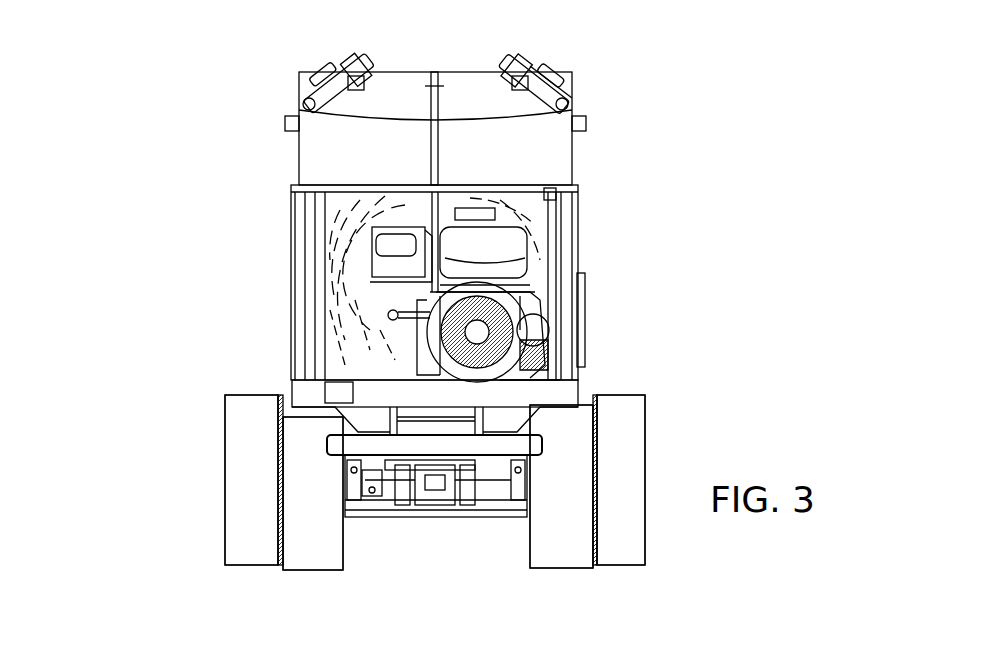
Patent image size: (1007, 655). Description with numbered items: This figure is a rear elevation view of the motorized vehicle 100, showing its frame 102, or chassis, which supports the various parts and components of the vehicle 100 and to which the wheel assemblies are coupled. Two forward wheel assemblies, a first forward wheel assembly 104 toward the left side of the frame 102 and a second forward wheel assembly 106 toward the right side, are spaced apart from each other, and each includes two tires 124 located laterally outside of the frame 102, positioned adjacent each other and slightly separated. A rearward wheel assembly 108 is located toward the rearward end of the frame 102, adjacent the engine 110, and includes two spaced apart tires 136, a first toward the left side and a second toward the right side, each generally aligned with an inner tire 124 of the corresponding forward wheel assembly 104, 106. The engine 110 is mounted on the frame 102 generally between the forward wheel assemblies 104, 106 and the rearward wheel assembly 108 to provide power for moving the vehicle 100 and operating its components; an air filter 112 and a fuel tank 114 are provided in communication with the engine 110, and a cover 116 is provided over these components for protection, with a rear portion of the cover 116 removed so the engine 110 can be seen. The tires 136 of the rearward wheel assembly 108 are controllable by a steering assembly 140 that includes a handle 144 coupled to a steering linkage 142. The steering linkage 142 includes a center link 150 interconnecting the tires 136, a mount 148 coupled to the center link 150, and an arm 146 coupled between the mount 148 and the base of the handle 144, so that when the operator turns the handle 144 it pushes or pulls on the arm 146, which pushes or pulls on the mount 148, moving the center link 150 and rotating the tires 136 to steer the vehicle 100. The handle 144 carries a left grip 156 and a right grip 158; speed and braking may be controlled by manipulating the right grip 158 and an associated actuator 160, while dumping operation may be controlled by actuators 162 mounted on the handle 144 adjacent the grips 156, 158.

The vehicle 100 is at (672, 112).
The frame 102 is at (295, 385).
The first forward wheel assembly 104 is at (220, 432).
The second forward wheel assembly 106 is at (648, 407).
The rearward wheel assembly 108 is at (265, 552).
The engine 110 is at (567, 326).
The air filter 112 is at (370, 250).
The fuel tank 114 is at (505, 246).
The cover 116 is at (295, 185).
The tire 124 is at (272, 400).
The tire 136 is at (303, 560).
The steering assembly 140 is at (328, 52).
The steering linkage 142 is at (478, 525).
The handle 144 is at (435, 170).
The arm 146 is at (395, 508).
The mount 148 is at (367, 497).
The center link 150 is at (407, 480).
The left grip 156 is at (302, 93).
The right grip 158 is at (558, 90).
The actuator 160 is at (540, 82).
The actuator 162 is at (365, 82).